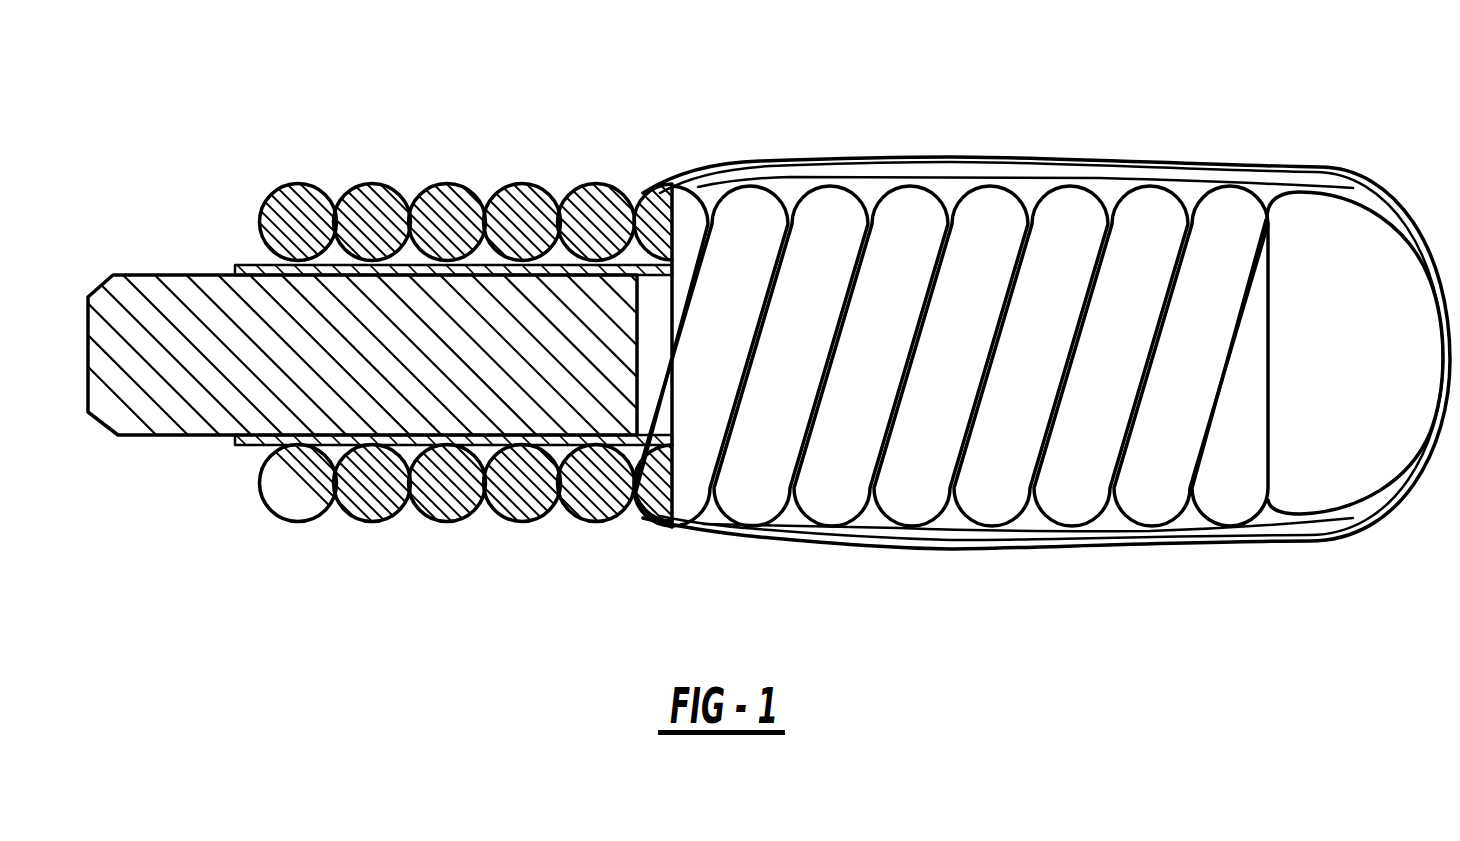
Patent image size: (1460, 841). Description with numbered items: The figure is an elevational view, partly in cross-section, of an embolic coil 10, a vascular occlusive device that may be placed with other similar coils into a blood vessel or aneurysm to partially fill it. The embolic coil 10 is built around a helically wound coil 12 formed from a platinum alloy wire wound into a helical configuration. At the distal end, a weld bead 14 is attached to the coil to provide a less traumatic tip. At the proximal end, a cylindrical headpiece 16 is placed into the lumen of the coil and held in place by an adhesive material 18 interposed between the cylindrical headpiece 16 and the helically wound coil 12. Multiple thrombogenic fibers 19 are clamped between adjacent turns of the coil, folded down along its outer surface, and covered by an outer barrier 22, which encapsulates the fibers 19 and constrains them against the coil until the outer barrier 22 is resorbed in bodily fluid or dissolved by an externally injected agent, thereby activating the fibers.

The embolic coil 10 is at (984, 130).
The helically wound coil 12 is at (462, 210).
The weld bead 14 is at (1360, 270).
The cylindrical headpiece 16 is at (118, 274).
The adhesive material 18 is at (235, 447).
The thrombogenic fibers 19 is at (985, 532).
The outer barrier 22 is at (1187, 540).